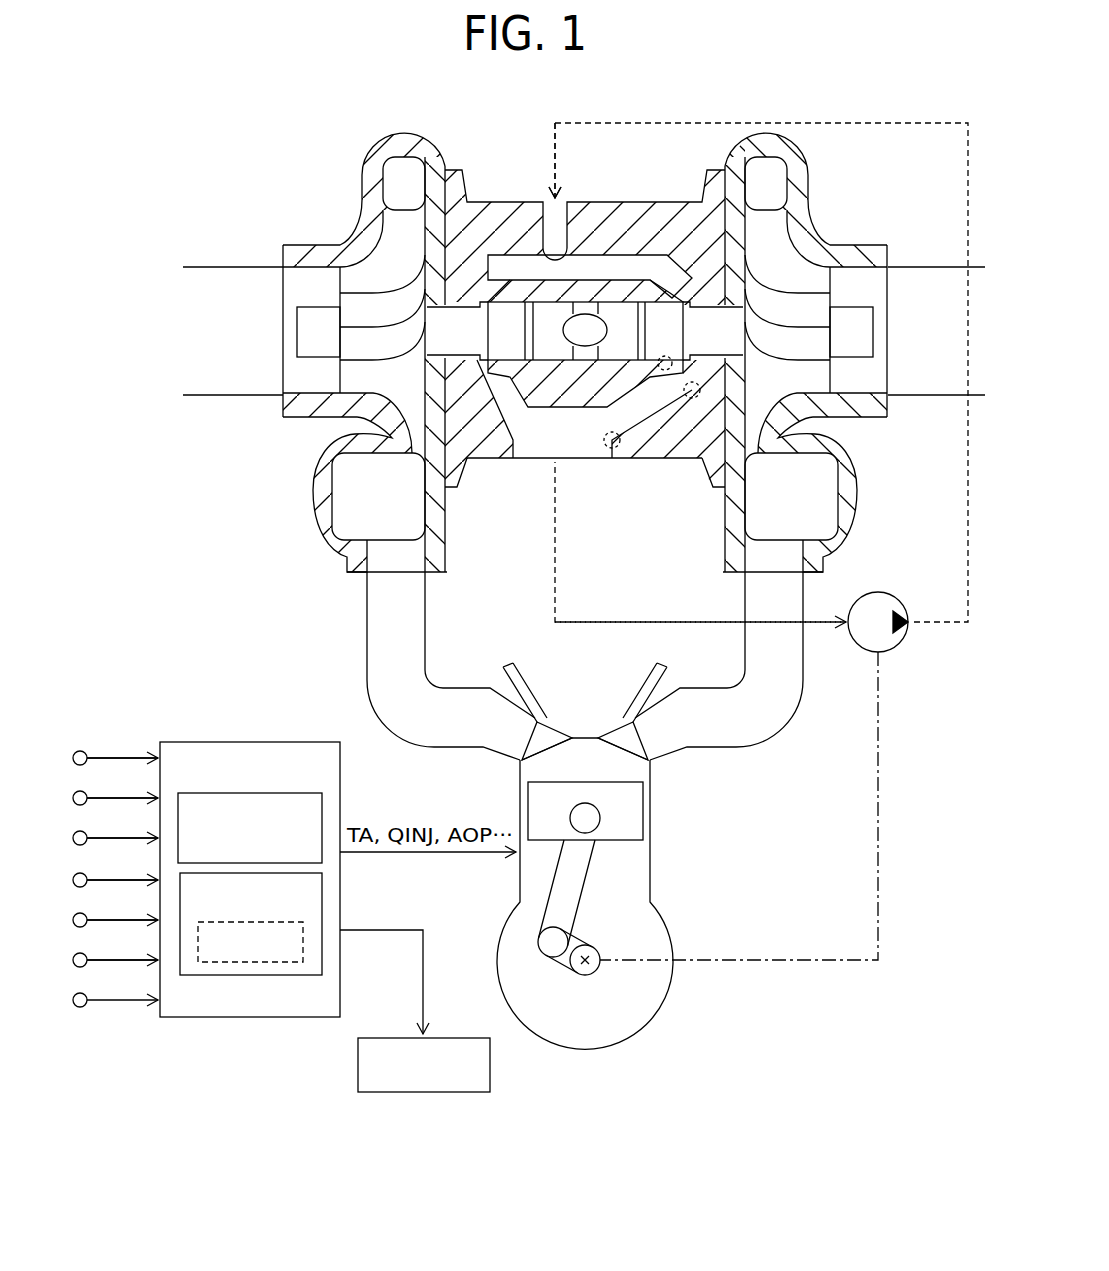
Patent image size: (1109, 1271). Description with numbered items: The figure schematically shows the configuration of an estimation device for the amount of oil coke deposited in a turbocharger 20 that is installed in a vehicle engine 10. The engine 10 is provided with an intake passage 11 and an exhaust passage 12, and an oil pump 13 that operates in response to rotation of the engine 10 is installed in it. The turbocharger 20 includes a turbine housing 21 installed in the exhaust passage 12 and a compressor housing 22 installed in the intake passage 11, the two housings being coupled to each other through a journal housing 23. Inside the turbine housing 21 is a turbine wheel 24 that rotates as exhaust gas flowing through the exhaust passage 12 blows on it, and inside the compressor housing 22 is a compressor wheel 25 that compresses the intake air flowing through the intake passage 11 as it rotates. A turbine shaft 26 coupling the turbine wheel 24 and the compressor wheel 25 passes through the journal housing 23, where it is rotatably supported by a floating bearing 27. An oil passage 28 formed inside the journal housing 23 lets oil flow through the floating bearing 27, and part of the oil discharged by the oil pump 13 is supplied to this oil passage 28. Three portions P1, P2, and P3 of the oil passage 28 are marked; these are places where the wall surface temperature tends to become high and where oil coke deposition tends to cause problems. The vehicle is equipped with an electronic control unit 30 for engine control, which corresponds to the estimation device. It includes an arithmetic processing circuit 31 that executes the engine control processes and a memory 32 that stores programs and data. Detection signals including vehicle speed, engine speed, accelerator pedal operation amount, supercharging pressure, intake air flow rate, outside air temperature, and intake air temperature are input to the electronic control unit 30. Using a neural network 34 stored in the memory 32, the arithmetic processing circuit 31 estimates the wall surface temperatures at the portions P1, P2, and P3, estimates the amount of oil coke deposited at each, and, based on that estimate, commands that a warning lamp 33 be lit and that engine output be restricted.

The engine 10 is at (682, 1012).
The intake passage 11 is at (234, 346).
The exhaust passage 12 is at (940, 346).
The oil pump 13 is at (900, 641).
The turbocharger 20 is at (296, 157).
The turbine housing 21 is at (810, 255).
The compressor housing 22 is at (352, 252).
The journal housing 23 is at (510, 212).
The turbine wheel 24 is at (827, 282).
The compressor wheel 25 is at (343, 280).
The turbine shaft 26 is at (467, 313).
The floating bearing 27 is at (556, 356).
The oil passage 28 is at (611, 281).
The electronic control unit 30 is at (200, 740).
The arithmetic processing circuit 31 is at (322, 814).
The memory 32 is at (322, 888).
The warning lamp 33 is at (358, 1058).
The neural network 34 is at (303, 952).
The portion P1 is at (665, 356).
The portion P2 is at (684, 391).
The portion P3 is at (612, 448).